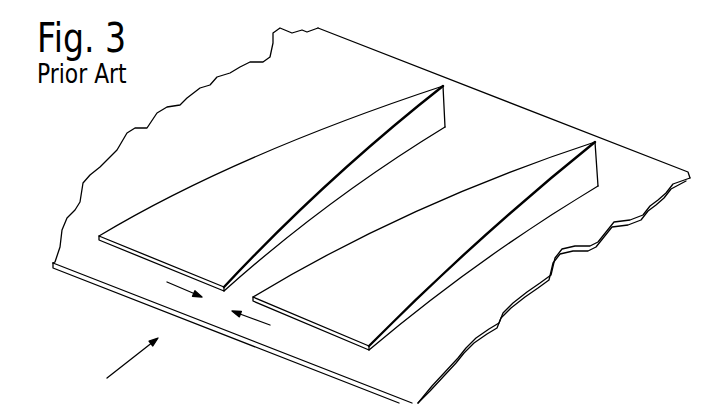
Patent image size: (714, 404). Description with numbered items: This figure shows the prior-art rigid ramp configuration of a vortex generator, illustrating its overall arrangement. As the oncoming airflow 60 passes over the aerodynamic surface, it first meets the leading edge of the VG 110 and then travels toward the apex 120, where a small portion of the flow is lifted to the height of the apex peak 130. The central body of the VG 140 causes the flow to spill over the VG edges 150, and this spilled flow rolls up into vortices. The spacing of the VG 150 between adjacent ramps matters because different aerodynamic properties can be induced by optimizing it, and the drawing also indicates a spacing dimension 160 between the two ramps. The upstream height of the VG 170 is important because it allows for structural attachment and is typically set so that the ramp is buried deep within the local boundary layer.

The oncoming airflow 60 is at (126, 366).
The leading edge of the VG 110 is at (150, 260).
The apex 120 is at (443, 86).
The apex peak height 130 is at (447, 109).
The central body of the VG 140 is at (267, 163).
The VG edges 150 is at (372, 144).
The gap between vortex generators 160 is at (218, 300).
The upstream height of the VG 170 is at (258, 276).